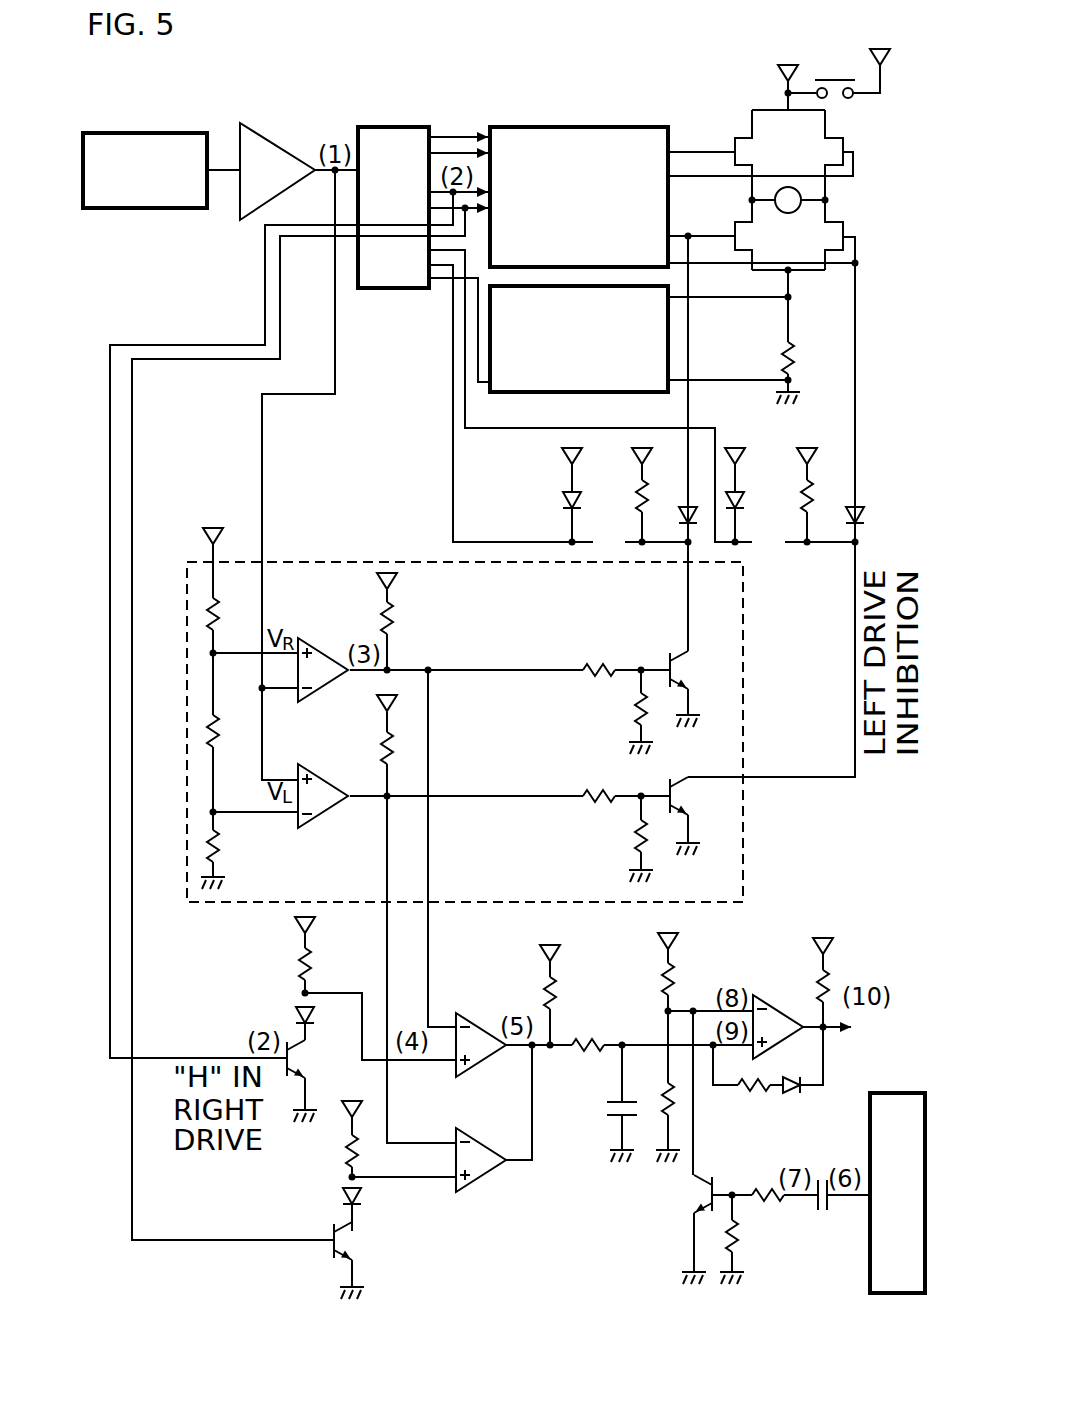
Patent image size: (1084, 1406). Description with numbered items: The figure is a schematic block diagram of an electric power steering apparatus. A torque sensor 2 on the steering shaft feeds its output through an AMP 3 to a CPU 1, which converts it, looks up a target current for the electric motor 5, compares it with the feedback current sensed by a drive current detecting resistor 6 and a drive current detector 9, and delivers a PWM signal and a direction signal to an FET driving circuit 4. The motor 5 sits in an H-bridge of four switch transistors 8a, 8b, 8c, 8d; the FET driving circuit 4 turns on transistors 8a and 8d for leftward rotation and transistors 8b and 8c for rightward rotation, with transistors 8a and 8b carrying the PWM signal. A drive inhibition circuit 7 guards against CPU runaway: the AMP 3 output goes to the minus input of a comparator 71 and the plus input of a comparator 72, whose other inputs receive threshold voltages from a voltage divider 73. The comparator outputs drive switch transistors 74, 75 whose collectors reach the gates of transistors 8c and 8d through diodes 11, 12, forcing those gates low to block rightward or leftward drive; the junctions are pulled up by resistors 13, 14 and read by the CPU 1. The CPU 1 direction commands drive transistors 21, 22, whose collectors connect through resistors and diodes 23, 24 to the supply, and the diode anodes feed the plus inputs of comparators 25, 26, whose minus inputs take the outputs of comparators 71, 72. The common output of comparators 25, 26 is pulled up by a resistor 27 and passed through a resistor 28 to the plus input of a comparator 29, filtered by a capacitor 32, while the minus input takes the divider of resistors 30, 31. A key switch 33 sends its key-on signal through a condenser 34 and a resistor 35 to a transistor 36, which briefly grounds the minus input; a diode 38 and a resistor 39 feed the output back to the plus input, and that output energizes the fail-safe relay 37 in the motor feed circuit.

The CPU 1 is at (361, 127).
The torque sensor 2 is at (172, 131).
The AMP 3 is at (258, 130).
The FET driving circuit 4 is at (627, 127).
The electric motor 5 is at (785, 213).
The drive current detecting resistor 6 is at (800, 360).
The drive inhibition circuit 7 is at (745, 878).
The switch transistor 8a is at (735, 150).
The switch transistor 8b is at (853, 165).
The switch transistor 8c is at (735, 234).
The switch transistor 8d is at (855, 228).
The drive current detector 9 is at (650, 393).
The diode 11 is at (688, 505).
The diode 12 is at (865, 515).
The resistor 13 is at (630, 500).
The resistor 14 is at (795, 500).
The transistor 21 is at (309, 1055).
The transistor 22 is at (358, 1243).
The diode 23 is at (300, 1012).
The diode 24 is at (344, 1200).
The comparator 25 is at (491, 1020).
The comparator 26 is at (483, 1188).
The resistor 27 is at (562, 993).
The resistor 28 is at (588, 1060).
The comparator 29 is at (786, 1003).
The resistor 30 is at (675, 982).
The resistor 31 is at (656, 1098).
The capacitor 32 is at (607, 1108).
The key switch 33 is at (902, 1093).
The condenser 34 is at (825, 1213).
The resistor 35 is at (770, 1210).
The transistor 36 is at (690, 1196).
The fail-safe relay 37 is at (840, 103).
The diode 38 is at (793, 1097).
The resistor 39 is at (750, 1095).
The comparator 71 is at (328, 648).
The comparator 72 is at (328, 768).
The voltage divider 73 is at (234, 630).
The switch transistor 74 is at (698, 665).
The switch transistor 75 is at (703, 792).